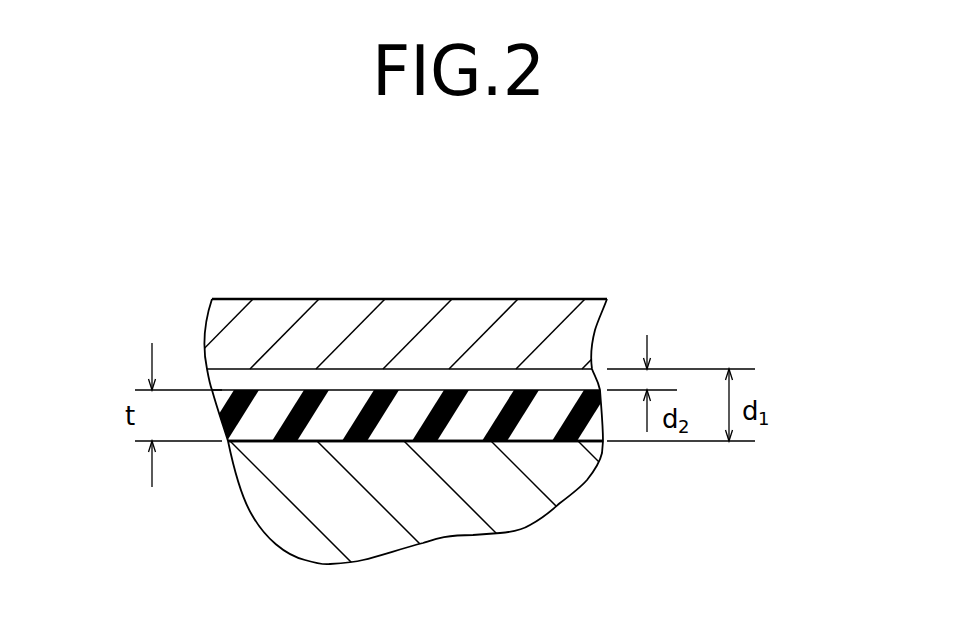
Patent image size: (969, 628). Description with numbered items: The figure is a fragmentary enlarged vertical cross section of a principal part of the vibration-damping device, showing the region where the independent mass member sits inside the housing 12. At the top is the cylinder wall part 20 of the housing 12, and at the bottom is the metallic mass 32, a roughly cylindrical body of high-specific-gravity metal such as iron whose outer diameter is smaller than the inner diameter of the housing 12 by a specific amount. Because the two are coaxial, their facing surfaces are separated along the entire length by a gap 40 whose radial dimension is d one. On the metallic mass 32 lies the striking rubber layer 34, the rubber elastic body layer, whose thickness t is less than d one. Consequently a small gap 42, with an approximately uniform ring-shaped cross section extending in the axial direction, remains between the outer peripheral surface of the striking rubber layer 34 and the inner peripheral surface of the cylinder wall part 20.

The housing 12 is at (479, 281).
The cylinder wall part 20 is at (410, 318).
The small gap 42 is at (533, 380).
The striking rubber layer 34 is at (287, 404).
The metallic mass 32 is at (438, 508).
The gap 40 is at (534, 447).